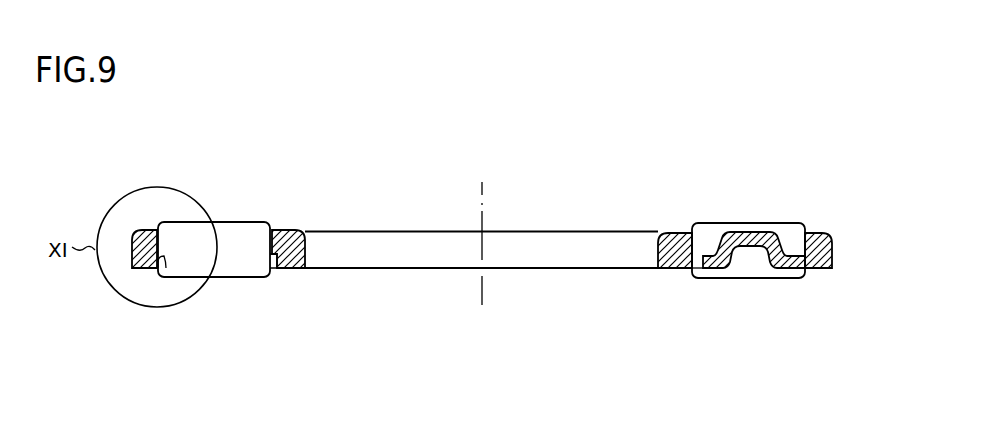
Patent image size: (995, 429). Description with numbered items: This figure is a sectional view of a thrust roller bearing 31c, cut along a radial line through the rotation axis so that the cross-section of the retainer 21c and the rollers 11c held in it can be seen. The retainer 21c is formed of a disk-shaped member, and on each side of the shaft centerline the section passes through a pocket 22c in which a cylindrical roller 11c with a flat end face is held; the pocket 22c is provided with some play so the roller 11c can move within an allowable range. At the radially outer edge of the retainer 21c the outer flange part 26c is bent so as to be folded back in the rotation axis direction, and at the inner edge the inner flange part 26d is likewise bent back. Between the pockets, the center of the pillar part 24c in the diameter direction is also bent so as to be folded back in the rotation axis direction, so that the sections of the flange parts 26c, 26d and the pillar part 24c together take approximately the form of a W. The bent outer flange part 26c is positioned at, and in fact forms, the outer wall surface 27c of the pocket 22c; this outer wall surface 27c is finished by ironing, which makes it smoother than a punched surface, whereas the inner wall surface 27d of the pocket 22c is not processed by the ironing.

The thrust roller bearing 31c is at (847, 102).
The retainer 21c is at (395, 252).
The pocket 22c is at (219, 204).
The roller 11c is at (242, 237).
The outer flange part 26c is at (138, 256).
The inner flange part 26d is at (299, 268).
The outer wall surface 27c is at (159, 258).
The inner wall surface 27d is at (268, 266).
The pillar part 24c is at (735, 248).